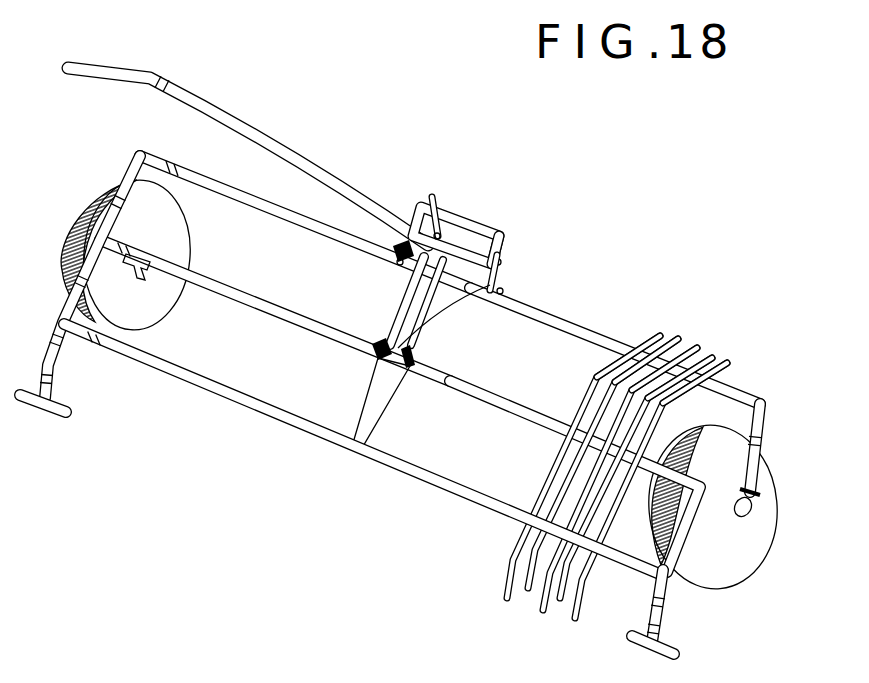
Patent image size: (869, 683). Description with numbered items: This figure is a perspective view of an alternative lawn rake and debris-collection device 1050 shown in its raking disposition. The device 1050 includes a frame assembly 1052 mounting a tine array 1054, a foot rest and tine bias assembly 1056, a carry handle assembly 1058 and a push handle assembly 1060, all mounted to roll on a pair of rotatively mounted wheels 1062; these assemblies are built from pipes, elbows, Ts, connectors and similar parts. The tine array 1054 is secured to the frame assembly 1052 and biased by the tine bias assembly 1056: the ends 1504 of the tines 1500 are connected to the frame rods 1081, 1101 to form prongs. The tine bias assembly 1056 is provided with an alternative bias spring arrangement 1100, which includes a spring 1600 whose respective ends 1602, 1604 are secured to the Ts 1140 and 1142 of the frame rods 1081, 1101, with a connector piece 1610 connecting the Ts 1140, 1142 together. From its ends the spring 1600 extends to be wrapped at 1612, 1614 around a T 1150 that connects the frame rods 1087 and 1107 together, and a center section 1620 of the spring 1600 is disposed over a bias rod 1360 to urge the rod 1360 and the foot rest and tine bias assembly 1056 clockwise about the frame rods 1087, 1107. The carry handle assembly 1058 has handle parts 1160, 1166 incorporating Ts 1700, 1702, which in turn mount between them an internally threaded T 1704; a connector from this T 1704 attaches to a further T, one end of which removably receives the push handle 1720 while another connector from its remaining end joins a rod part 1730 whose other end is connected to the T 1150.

The lawn rake and debris-collection device 1050 is at (667, 242).
The frame assembly 1052 is at (765, 396).
The tine array 1054 is at (575, 482).
The foot rest and tine bias assembly 1056 is at (60, 367).
The carry handle assembly 1058 is at (461, 224).
The push handle assembly 1060 is at (248, 144).
The wheels 1062 is at (162, 303).
The frame rod 1081 is at (585, 333).
The frame rod 1087 is at (541, 424).
The bias spring arrangement 1100 is at (437, 377).
The frame rod 1101 is at (278, 170).
The frame rod 1107 is at (274, 287).
The T 1140 is at (432, 327).
The T 1142 is at (400, 262).
The T 1150 is at (380, 370).
The handle part 1160 is at (492, 248).
The handle part 1166 is at (405, 222).
The bias rod 1360 is at (470, 490).
The tines 1500 is at (588, 585).
The ends of tines 1504 is at (732, 352).
The spring 1600 is at (385, 406).
The spring end 1602 is at (500, 291).
The spring end 1604 is at (437, 235).
The connector piece 1610 is at (478, 262).
The spring wrap 1612 is at (414, 365).
The spring wrap 1614 is at (388, 342).
The rod end 1620 is at (350, 450).
The T 1700 is at (498, 262).
The T 1702 is at (405, 238).
The T 1704 is at (453, 253).
The push handle 1720 is at (204, 106).
The rod part 1730 is at (414, 328).